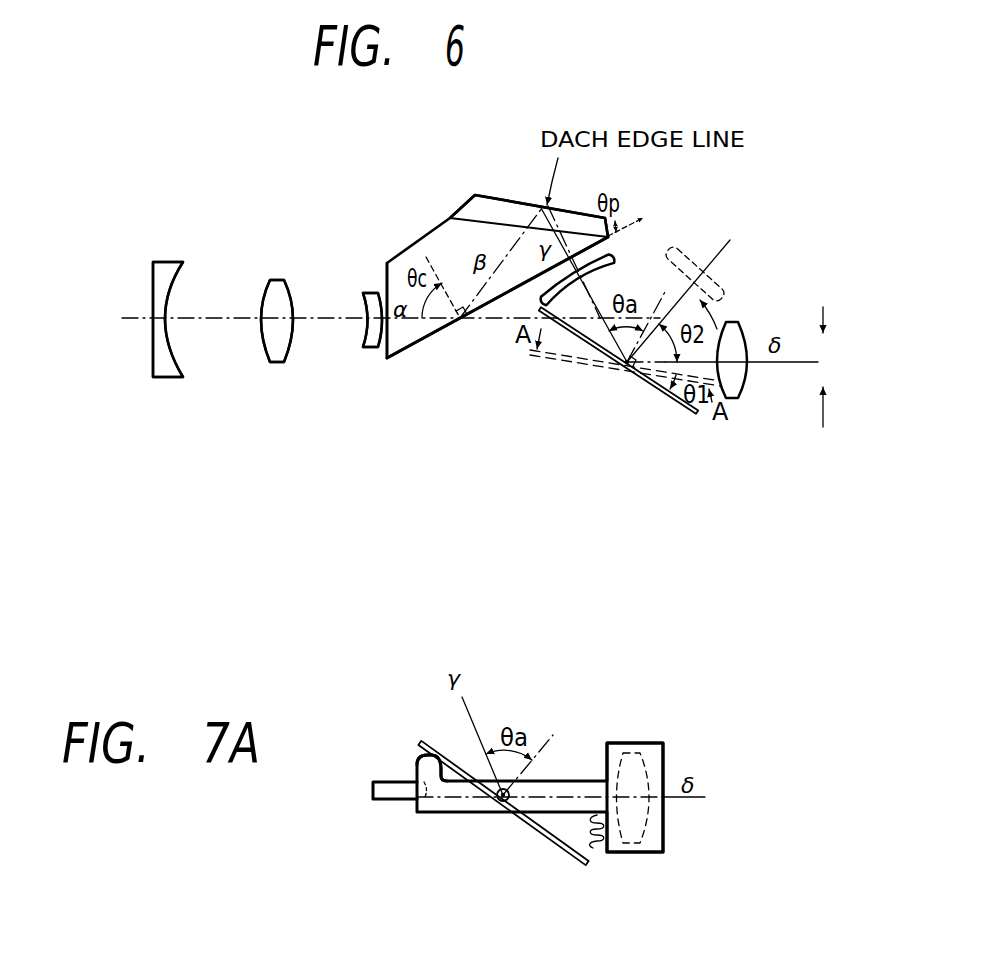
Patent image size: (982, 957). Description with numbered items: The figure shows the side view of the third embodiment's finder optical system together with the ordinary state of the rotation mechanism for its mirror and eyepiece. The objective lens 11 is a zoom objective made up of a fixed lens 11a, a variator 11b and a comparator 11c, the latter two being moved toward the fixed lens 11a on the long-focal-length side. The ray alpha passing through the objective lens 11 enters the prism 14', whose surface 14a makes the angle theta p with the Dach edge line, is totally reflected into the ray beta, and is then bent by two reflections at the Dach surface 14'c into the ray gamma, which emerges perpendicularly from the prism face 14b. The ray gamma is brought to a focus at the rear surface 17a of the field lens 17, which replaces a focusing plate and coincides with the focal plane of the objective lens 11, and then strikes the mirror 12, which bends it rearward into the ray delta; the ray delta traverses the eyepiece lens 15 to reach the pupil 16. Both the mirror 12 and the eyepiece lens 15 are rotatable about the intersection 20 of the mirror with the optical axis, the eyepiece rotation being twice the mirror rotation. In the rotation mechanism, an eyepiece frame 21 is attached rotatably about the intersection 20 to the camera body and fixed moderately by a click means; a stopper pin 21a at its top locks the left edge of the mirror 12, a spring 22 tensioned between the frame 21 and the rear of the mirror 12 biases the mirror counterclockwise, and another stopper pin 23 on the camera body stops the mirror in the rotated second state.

In FIG. 6, the objective lens 11 is at (362, 249).
In FIG. 6, the fixed lens 11a is at (170, 378).
In FIG. 6, the variator 11b is at (280, 362).
In FIG. 6, the comparator 11c is at (370, 350).
In FIG. 6, the prism 14' is at (497, 253).
In FIG. 6, the surface of the prism 14a is at (387, 277).
In FIG. 6, the Dach surface 14'c is at (529, 193).
In FIG. 6, the prism reflecting surface 14b is at (475, 330).
In FIG. 6, the field lens 17 is at (610, 260).
In FIG. 6, the rear surface of the field lens 17a is at (612, 278).
In FIG. 6, the mirror 12 is at (658, 389).
In FIG. 7A, the mirror 12 is at (542, 837).
In FIG. 6, the intersection 20 is at (620, 370).
In FIG. 7A, the intersection 20 is at (503, 789).
In FIG. 6, the eyepiece lens 15 is at (737, 323).
In FIG. 7A, the eyepiece lens 15 is at (653, 767).
In FIG. 6, the pupil 16 is at (823, 307).
In FIG. 7A, the eyepiece frame 21 is at (578, 785).
In FIG. 7A, the stopper pin 21a is at (420, 770).
In FIG. 7A, the spring 22 is at (594, 847).
In FIG. 7A, the another stopper pin 23 is at (390, 799).